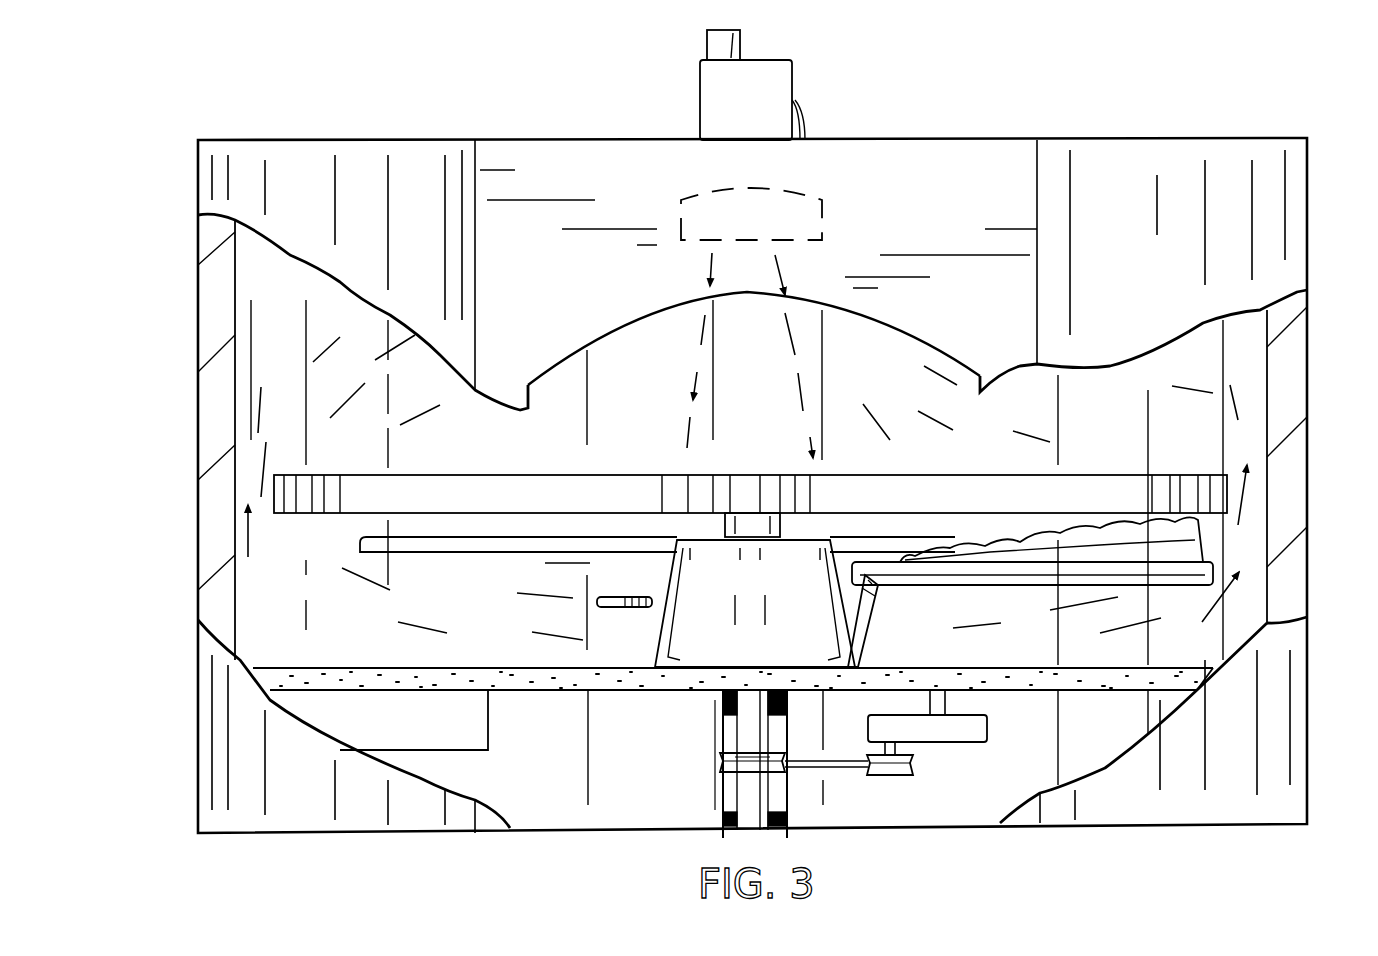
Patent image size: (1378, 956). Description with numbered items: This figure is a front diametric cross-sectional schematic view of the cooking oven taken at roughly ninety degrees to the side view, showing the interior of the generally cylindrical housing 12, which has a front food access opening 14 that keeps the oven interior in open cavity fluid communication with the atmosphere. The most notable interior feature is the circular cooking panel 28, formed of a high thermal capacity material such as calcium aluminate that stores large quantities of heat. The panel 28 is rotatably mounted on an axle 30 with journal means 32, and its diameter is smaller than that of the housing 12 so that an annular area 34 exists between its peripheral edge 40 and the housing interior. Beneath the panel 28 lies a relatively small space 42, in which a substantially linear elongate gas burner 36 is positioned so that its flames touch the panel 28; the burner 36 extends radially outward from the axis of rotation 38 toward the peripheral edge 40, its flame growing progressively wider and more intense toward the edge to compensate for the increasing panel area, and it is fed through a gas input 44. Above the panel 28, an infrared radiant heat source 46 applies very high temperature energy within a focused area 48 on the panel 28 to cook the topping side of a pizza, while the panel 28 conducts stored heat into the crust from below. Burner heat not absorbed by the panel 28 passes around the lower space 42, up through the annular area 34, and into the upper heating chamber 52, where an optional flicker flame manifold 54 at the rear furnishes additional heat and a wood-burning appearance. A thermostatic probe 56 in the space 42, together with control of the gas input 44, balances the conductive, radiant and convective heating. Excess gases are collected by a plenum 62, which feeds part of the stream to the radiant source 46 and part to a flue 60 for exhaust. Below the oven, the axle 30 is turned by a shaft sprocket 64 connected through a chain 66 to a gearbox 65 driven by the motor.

The housing 12 is at (1307, 140).
The food access opening 14 is at (918, 346).
The cooking panel 28 is at (545, 468).
The axle 30 is at (745, 808).
The journal means 32 is at (718, 815).
The annular area 34 is at (1246, 482).
The gas burner 36 is at (1190, 550).
The axis of rotation 38 is at (782, 437).
The peripheral edge 40 is at (249, 485).
The space beneath panel 42 is at (470, 596).
The gas input 44 is at (866, 584).
The infrared radiant heat source 46 is at (822, 200).
The focused area 48 is at (690, 375).
The heating chamber 52 is at (462, 468).
The flicker flame manifold 54 is at (383, 556).
The thermostatic probe 56 is at (622, 610).
The flue 60 is at (736, 58).
The plenum 62 is at (822, 78).
The shaft sprocket 64 is at (720, 757).
The gearbox 65 is at (982, 727).
The chain 66 is at (805, 760).